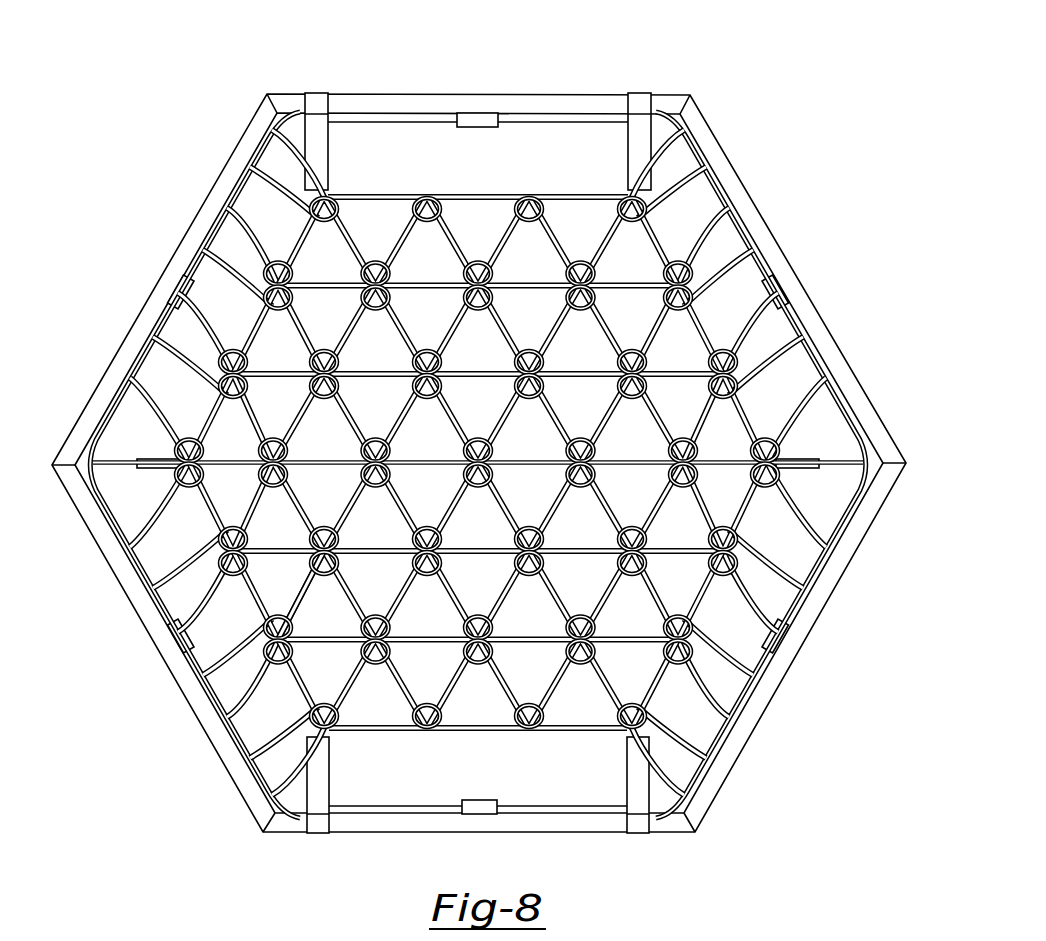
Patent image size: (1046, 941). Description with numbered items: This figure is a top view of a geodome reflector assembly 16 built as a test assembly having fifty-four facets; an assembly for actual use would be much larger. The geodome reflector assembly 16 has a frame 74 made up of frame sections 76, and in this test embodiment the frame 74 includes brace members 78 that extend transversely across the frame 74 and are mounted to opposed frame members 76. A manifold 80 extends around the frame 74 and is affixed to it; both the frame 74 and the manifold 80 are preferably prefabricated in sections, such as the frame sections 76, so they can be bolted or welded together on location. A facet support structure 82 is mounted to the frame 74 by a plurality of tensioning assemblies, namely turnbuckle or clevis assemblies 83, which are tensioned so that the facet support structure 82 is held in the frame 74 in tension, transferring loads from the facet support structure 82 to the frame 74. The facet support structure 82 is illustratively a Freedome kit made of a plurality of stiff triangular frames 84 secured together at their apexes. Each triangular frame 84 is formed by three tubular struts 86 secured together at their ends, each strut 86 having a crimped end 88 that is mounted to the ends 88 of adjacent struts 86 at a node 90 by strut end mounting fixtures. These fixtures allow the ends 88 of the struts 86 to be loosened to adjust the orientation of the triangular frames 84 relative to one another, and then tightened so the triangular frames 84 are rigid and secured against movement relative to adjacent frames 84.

The geodome reflector assembly 16 is at (834, 182).
The frame 74 is at (742, 753).
The frame sections 76 is at (512, 95).
The brace members 78 is at (322, 142).
The manifold 80 is at (355, 808).
The facet support structure 82 is at (632, 610).
The clevis assemblies 83 is at (297, 112).
The triangular frames 84 is at (340, 447).
The struts 86 is at (310, 233).
The crimped ends 88 is at (308, 582).
The node 90 is at (316, 545).